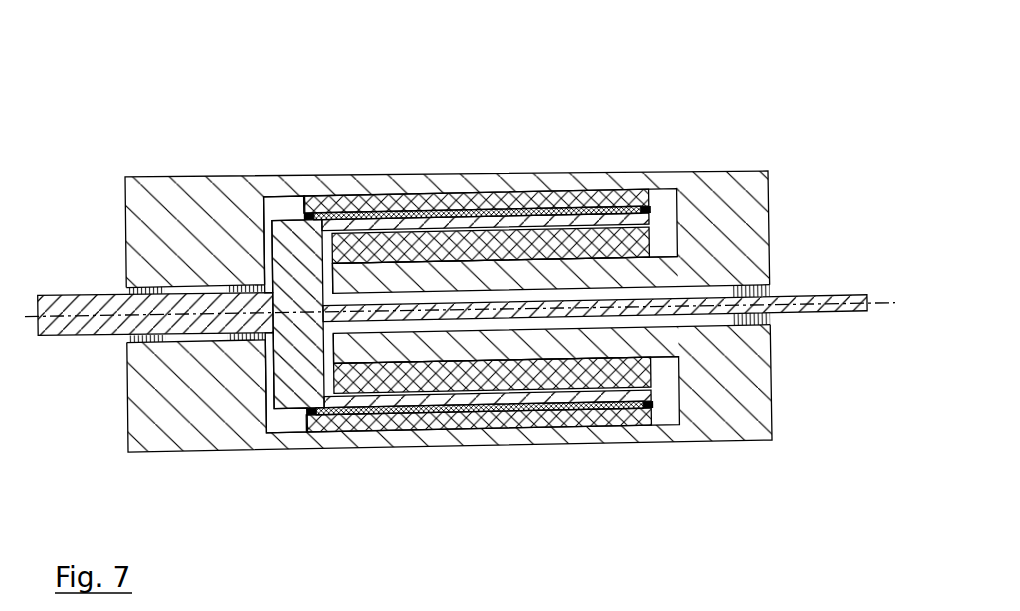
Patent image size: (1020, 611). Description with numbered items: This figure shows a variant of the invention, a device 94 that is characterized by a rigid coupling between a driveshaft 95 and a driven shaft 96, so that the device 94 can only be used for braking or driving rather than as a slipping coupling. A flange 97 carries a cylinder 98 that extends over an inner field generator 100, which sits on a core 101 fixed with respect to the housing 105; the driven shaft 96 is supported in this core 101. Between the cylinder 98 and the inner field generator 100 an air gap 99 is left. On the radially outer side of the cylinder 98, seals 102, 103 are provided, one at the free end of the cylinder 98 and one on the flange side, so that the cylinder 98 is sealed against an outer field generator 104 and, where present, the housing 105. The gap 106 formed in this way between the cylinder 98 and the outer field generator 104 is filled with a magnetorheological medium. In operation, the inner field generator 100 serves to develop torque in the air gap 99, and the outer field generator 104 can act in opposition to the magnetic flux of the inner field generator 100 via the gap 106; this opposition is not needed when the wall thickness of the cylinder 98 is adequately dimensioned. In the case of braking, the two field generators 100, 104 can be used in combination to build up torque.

The device 94 is at (173, 147).
The driveshaft 95 is at (87, 303).
The driven shaft 96 is at (823, 298).
The flange 97 is at (292, 248).
The cylinder 98 is at (413, 223).
The air gap 99 is at (497, 230).
The inner field generator 100 is at (578, 242).
The core 101 is at (607, 277).
The seal 102 is at (311, 430).
The seal 103 is at (650, 410).
The outer field generator 104 is at (541, 383).
The housing 105 is at (216, 463).
The gap 106 is at (438, 417).